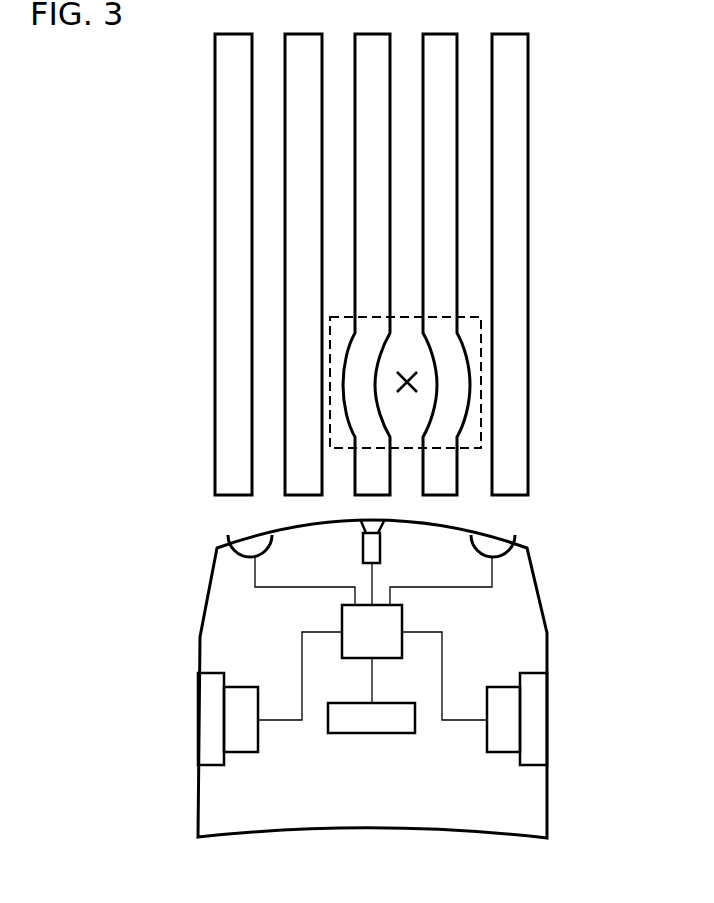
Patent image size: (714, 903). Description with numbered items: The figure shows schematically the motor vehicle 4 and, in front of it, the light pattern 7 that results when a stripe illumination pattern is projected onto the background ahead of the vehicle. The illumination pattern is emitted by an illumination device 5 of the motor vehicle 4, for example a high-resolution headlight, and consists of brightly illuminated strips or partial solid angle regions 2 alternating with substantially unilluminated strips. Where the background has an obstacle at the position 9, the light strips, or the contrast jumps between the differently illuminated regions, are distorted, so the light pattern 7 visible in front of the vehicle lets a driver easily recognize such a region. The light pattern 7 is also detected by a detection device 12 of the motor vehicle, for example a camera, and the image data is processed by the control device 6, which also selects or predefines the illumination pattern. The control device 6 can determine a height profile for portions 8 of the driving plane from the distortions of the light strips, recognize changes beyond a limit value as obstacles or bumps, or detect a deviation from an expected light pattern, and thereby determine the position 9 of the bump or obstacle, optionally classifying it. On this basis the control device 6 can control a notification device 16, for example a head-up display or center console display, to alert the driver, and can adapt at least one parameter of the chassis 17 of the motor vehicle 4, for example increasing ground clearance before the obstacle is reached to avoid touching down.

The partial solid angle regions 2 is at (443, 69).
The motor vehicle 4 is at (198, 803).
The illumination device 5 is at (240, 556).
The control device 6 is at (402, 617).
The light pattern 7 is at (336, 313).
The portions of a driving plane 8 is at (465, 317).
The position 9 is at (412, 381).
The detection device 12 is at (382, 548).
The notification device 16 is at (370, 733).
The chassis 17 is at (503, 752).